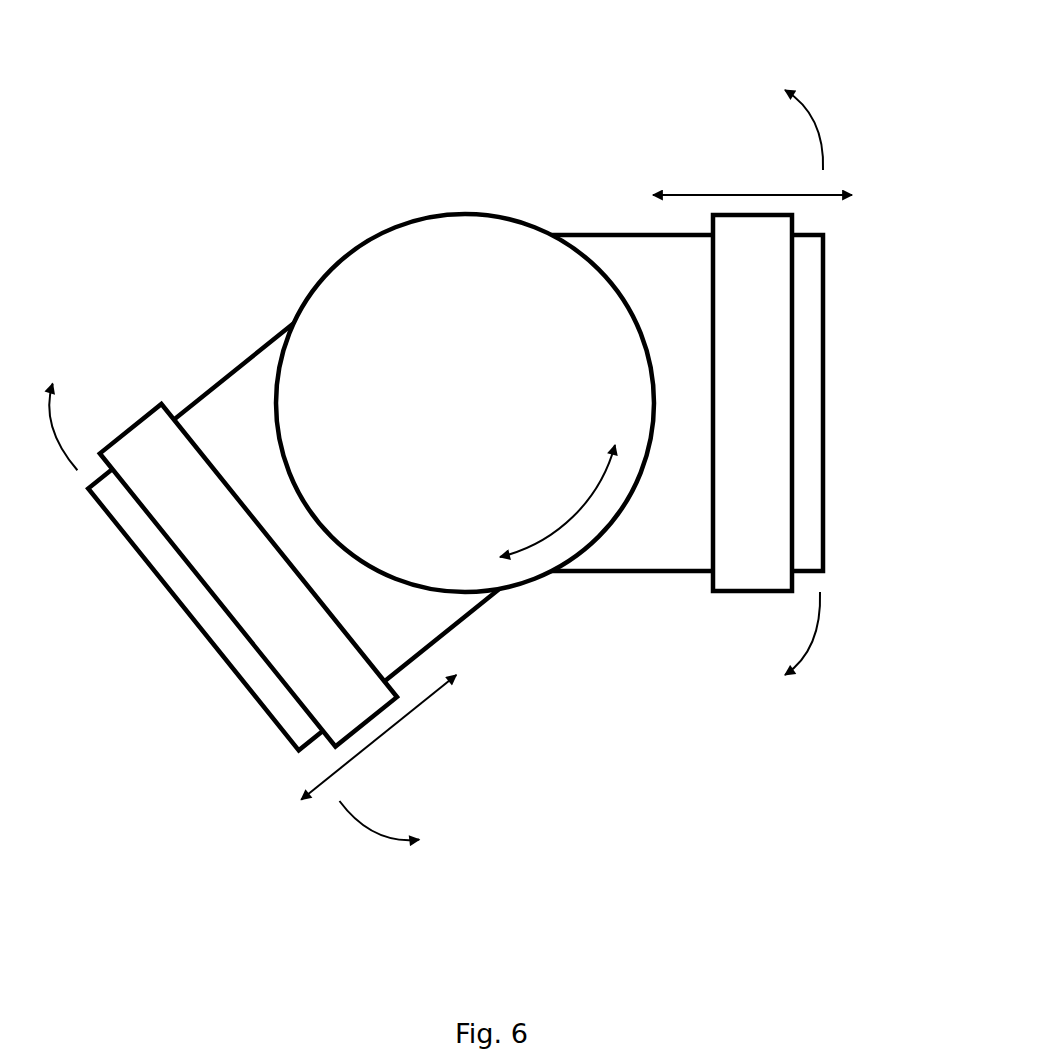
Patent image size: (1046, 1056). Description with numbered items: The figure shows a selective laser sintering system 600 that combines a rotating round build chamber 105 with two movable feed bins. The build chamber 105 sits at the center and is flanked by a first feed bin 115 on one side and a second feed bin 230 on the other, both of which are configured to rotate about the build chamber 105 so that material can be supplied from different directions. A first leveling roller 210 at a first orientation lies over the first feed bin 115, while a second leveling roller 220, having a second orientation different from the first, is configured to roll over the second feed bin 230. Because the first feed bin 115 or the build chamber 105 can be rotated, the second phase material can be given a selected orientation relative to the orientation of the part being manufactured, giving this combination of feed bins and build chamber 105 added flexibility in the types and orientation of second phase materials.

The selective laser sintering system 600 is at (481, 449).
The build chamber 105 is at (475, 212).
The first feed bin 115 is at (823, 343).
The first leveling roller 210 is at (753, 591).
The second leveling roller 220 is at (131, 428).
The second feed bin 230 is at (188, 615).